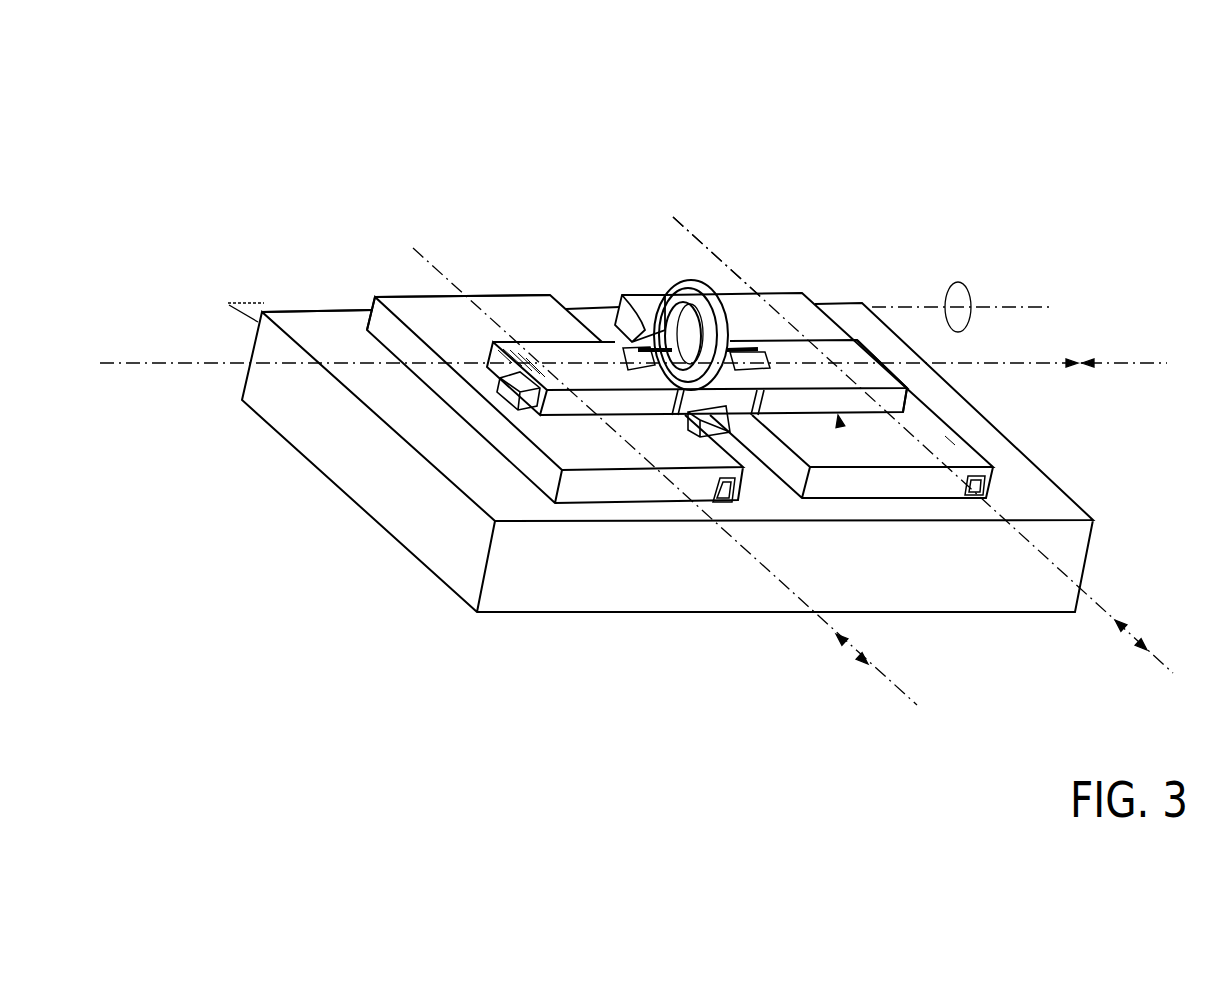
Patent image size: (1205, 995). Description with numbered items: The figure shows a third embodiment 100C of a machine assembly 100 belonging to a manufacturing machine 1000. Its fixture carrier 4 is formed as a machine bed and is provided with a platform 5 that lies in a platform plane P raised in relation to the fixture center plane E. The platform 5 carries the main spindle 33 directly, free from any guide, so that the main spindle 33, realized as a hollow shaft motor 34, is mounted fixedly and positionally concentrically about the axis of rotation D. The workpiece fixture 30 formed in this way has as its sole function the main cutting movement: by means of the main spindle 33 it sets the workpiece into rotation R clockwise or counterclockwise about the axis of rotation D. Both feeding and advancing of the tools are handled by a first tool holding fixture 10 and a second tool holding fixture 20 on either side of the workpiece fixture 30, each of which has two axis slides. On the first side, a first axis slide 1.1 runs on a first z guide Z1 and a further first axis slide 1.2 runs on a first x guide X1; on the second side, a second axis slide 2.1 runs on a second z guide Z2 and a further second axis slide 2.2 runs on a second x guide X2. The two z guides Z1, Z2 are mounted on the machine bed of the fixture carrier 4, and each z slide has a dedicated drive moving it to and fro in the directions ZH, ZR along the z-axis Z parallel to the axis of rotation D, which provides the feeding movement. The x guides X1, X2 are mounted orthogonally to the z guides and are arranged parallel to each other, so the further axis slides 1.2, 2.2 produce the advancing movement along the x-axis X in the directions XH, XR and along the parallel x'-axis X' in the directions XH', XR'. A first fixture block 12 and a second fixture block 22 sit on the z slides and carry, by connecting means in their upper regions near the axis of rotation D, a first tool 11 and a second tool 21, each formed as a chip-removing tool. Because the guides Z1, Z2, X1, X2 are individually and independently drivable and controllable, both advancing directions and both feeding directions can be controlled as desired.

The manufacturing machine 1000 is at (333, 85).
The machine assembly 100 is at (359, 217).
The third embodiment of the machine assembly 100C is at (341, 233).
The fixture carrier 4 is at (495, 592).
The first tool holding fixture 10 is at (479, 277).
The first axis slide 1.1 is at (555, 443).
The further first axis slide 1.2 is at (507, 373).
The first fixture block 12 is at (697, 324).
The first tool 11 is at (638, 346).
The second tool holding fixture 20 is at (829, 434).
The second axis slide 2.1 is at (829, 445).
The further second axis slide 2.2 is at (964, 574).
The second fixture block 22 is at (757, 340).
The second tool 21 is at (735, 340).
The workpiece fixture 30 is at (594, 300).
The main spindle 33 is at (675, 283).
The hollow shaft motor 34 is at (707, 228).
The platform 5 is at (735, 430).
The platform plane P is at (382, 288).
The fixture center plane E is at (244, 303).
The rotation R is at (963, 282).
The axis of rotation D is at (1003, 305).
The z-axis Z is at (1157, 361).
The back direction in the z direction ZR is at (1072, 360).
The forward direction in the z direction ZH is at (1088, 367).
The x-axis X is at (665, 514).
The back direction in the x direction XR is at (817, 667).
The forward direction in the x direction XH is at (846, 694).
The x'-axis X' is at (933, 445).
The back direction in the x' direction XR' is at (1093, 654).
The forward direction in the x' direction XH' is at (1126, 679).
The first x guide X1 is at (694, 420).
The first z guide Z1 is at (676, 420).
The second x guide X2 is at (840, 427).
The second z guide Z2 is at (950, 440).